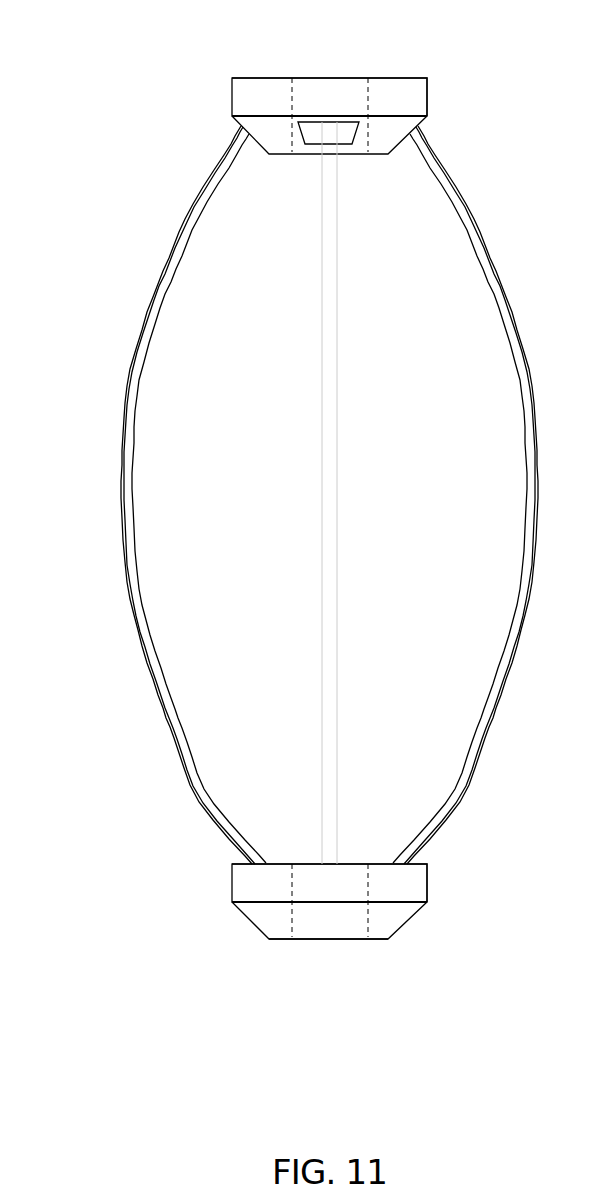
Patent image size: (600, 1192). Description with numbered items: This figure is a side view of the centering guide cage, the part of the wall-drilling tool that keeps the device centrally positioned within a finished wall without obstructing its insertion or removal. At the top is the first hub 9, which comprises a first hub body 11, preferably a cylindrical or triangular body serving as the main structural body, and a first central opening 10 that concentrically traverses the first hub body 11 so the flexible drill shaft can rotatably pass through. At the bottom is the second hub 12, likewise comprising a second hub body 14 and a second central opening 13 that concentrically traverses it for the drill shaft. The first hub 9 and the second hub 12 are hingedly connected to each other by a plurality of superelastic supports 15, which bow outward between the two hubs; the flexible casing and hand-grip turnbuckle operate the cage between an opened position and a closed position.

The first hub 9 is at (210, 103).
The first central opening 10 is at (330, 80).
The first hub body 11 is at (418, 102).
The second hub 12 is at (207, 881).
The second central opening 13 is at (330, 932).
The second hub body 14 is at (418, 891).
The superelastic supports 15 is at (125, 545).